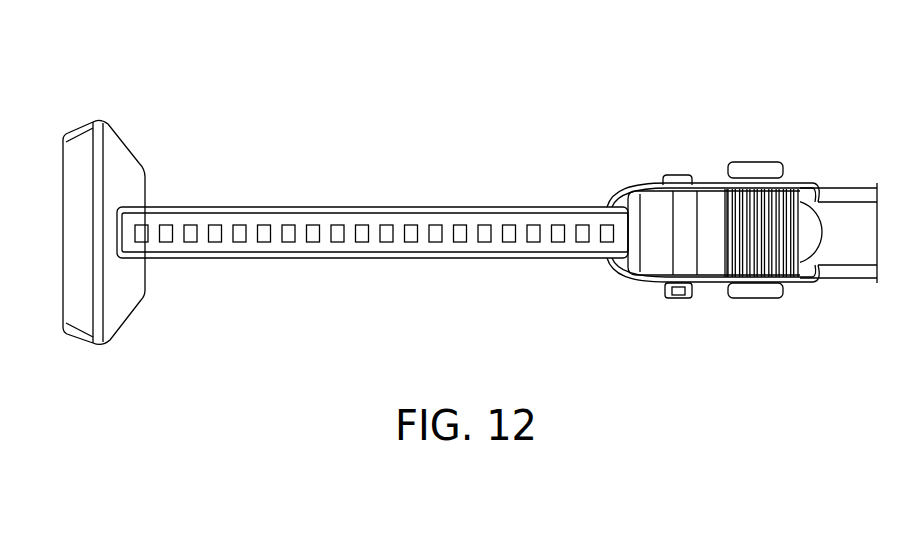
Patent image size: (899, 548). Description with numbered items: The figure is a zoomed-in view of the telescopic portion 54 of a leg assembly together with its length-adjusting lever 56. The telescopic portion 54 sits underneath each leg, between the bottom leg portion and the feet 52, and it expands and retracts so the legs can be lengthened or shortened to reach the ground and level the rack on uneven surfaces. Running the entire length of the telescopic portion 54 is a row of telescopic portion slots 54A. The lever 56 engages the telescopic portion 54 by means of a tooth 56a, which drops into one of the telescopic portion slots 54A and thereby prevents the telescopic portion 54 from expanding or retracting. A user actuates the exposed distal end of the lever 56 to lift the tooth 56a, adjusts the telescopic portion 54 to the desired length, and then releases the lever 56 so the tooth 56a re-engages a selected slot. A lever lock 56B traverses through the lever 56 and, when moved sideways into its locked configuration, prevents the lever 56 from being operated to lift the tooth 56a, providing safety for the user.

The feet 52 is at (99, 121).
The telescopic portion 54 is at (221, 206).
The telescopic portion slots 54A is at (338, 224).
The lever 56 is at (704, 194).
The tooth 56a is at (617, 265).
The lever lock 56B is at (754, 169).